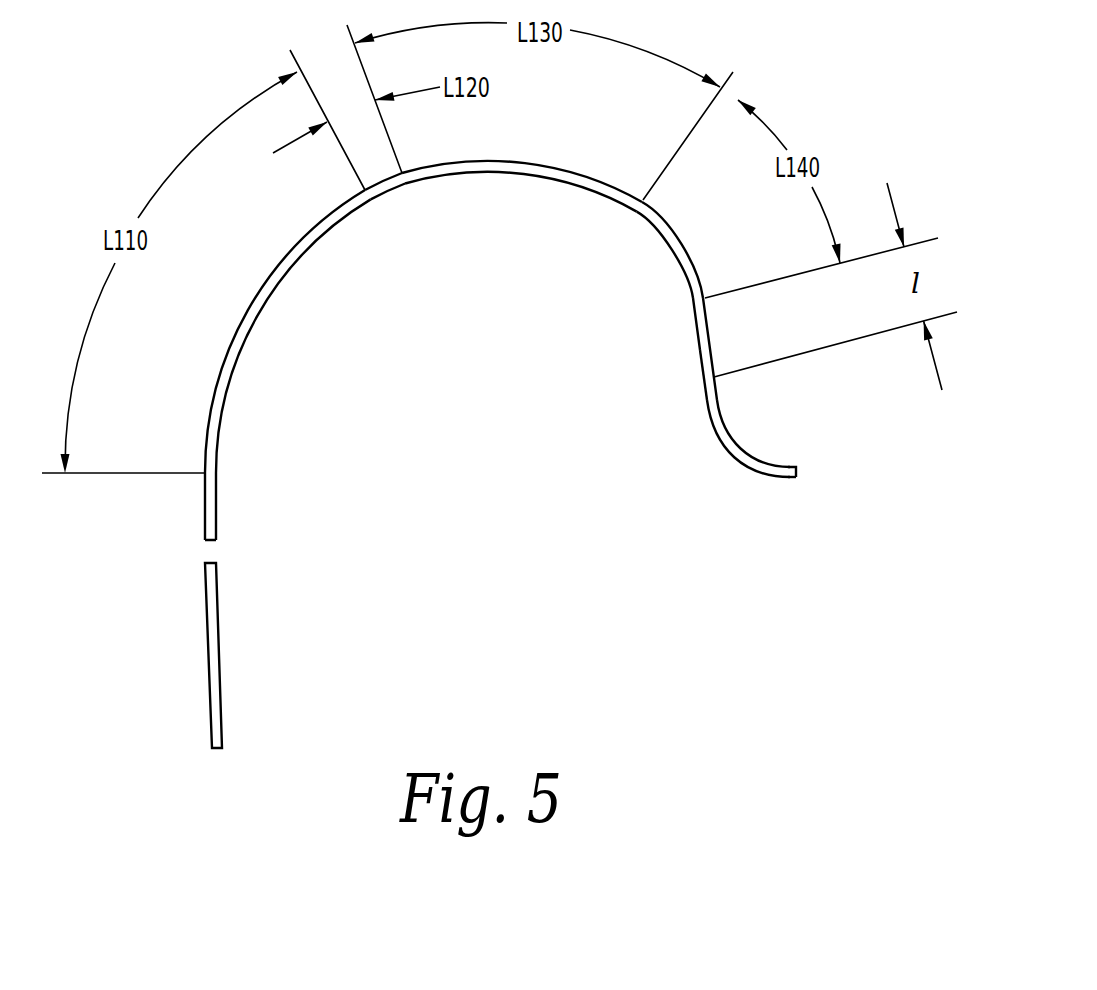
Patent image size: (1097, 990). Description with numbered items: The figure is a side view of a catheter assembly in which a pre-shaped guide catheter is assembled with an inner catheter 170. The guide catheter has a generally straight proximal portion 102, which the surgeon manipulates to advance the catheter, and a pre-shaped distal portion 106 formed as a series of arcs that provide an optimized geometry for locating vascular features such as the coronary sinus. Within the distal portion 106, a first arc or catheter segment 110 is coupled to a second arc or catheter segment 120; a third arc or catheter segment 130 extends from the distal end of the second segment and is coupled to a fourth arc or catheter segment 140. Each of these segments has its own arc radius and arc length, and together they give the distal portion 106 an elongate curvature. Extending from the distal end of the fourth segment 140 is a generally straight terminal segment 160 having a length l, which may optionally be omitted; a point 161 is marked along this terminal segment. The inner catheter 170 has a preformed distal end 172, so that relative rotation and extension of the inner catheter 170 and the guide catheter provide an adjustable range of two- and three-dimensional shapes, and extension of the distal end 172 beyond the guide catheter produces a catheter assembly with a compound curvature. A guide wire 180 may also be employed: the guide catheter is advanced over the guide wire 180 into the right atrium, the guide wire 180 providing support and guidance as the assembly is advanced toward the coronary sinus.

The proximal portion 102 is at (221, 653).
The distal portion 106 is at (204, 521).
The first arc or catheter segment 110 is at (240, 325).
The second arc or catheter segment 120 is at (393, 184).
The third arc or catheter segment 130 is at (528, 165).
The fourth arc or catheter segment 140 is at (684, 248).
The terminal segment 160 is at (709, 338).
The inner surface of straight section 161 is at (704, 378).
The inner catheter 170 is at (737, 448).
The preformed distal end 172 is at (760, 477).
The guide wire 180 is at (797, 472).